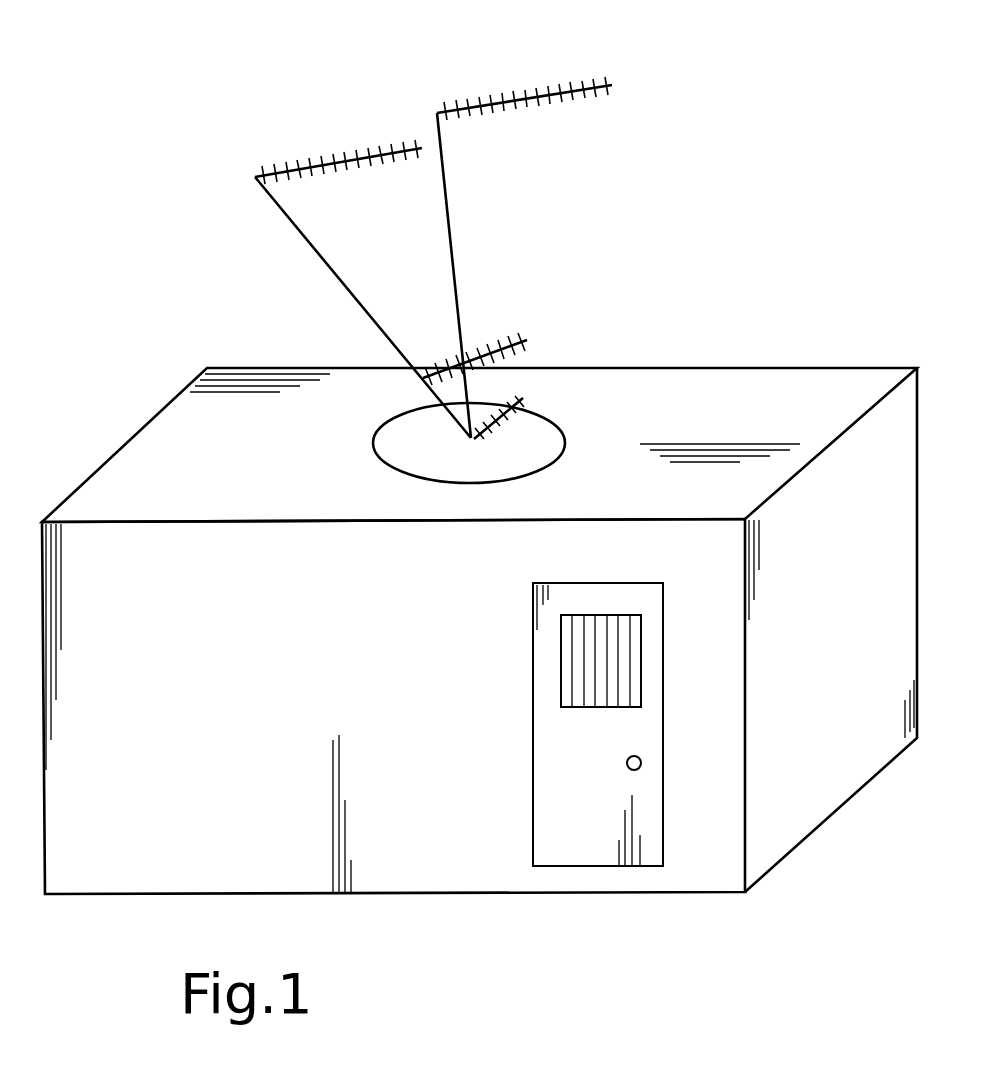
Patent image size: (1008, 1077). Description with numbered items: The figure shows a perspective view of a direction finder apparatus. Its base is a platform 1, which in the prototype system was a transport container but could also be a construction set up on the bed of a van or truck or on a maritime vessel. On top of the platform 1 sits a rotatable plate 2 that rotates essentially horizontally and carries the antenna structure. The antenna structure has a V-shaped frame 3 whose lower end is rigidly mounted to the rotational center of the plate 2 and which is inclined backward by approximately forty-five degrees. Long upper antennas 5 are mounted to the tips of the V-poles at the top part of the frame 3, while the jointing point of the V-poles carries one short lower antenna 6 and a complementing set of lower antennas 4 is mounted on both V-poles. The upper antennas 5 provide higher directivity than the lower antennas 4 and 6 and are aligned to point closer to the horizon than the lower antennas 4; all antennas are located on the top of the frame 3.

The platform 1 is at (130, 457).
The rotatable plate 2 is at (388, 444).
The V-shaped frame 3 is at (326, 258).
The lower antennas 4 is at (431, 372).
The upper antennas 5 is at (375, 148).
The short lower antenna 6 is at (513, 393).